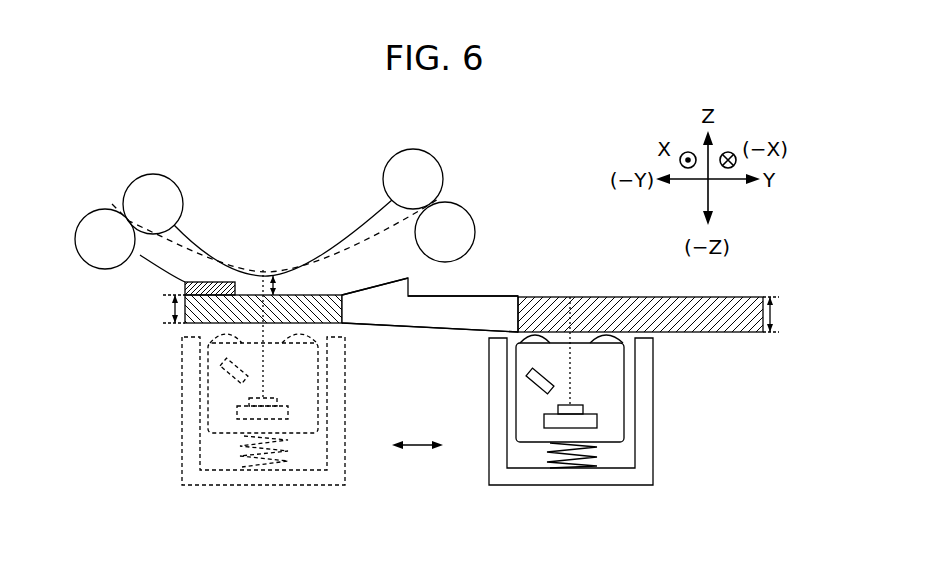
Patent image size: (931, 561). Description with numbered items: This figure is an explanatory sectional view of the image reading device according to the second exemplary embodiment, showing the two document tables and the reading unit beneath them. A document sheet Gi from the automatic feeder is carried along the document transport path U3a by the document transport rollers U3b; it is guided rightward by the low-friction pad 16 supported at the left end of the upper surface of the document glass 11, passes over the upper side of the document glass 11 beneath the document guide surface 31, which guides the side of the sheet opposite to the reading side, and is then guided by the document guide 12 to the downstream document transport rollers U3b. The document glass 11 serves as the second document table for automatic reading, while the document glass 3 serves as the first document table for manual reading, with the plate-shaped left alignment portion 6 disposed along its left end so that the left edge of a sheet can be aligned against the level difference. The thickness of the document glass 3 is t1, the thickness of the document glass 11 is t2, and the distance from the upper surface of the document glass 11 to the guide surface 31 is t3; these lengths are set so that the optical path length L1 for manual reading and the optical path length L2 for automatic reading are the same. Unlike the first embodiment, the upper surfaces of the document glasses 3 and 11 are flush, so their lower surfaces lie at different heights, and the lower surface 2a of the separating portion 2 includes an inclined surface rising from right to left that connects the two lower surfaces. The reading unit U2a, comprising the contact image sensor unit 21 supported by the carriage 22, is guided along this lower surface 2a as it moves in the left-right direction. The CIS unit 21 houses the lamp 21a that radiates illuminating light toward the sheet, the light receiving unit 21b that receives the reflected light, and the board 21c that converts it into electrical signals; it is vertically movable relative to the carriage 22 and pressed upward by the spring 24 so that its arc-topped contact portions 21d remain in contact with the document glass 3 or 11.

The document transport rollers U3b is at (85, 227).
The document transport path U3a is at (182, 236).
The document guide surface 31 is at (337, 240).
The document sheet Gi is at (450, 186).
The pad 16 is at (185, 283).
The document glass 11 is at (337, 295).
The document guide 12 is at (383, 284).
The separating portion 2 is at (430, 307).
The lower surface of the separating portion 2a is at (418, 327).
The left alignment portion 6 is at (482, 303).
The document glass 3 is at (757, 297).
The thickness of the document glass for manual reading t1 is at (778, 314).
The thickness of the document glass for automatic reading t2 is at (166, 309).
The distance between the upper surface of the document glass and the guide surface t3 is at (277, 282).
The optical path length for automatic reading L2 is at (263, 370).
The optical path length for manual reading L1 is at (568, 352).
The reading unit U2a is at (597, 387).
The carriage 22 is at (647, 405).
The contact image sensor unit 21 is at (615, 369).
The contact portions 21d is at (606, 332).
The lamp 21a is at (535, 375).
The light receiving unit 21b is at (556, 408).
The board 21c is at (597, 419).
The spring 24 is at (555, 468).